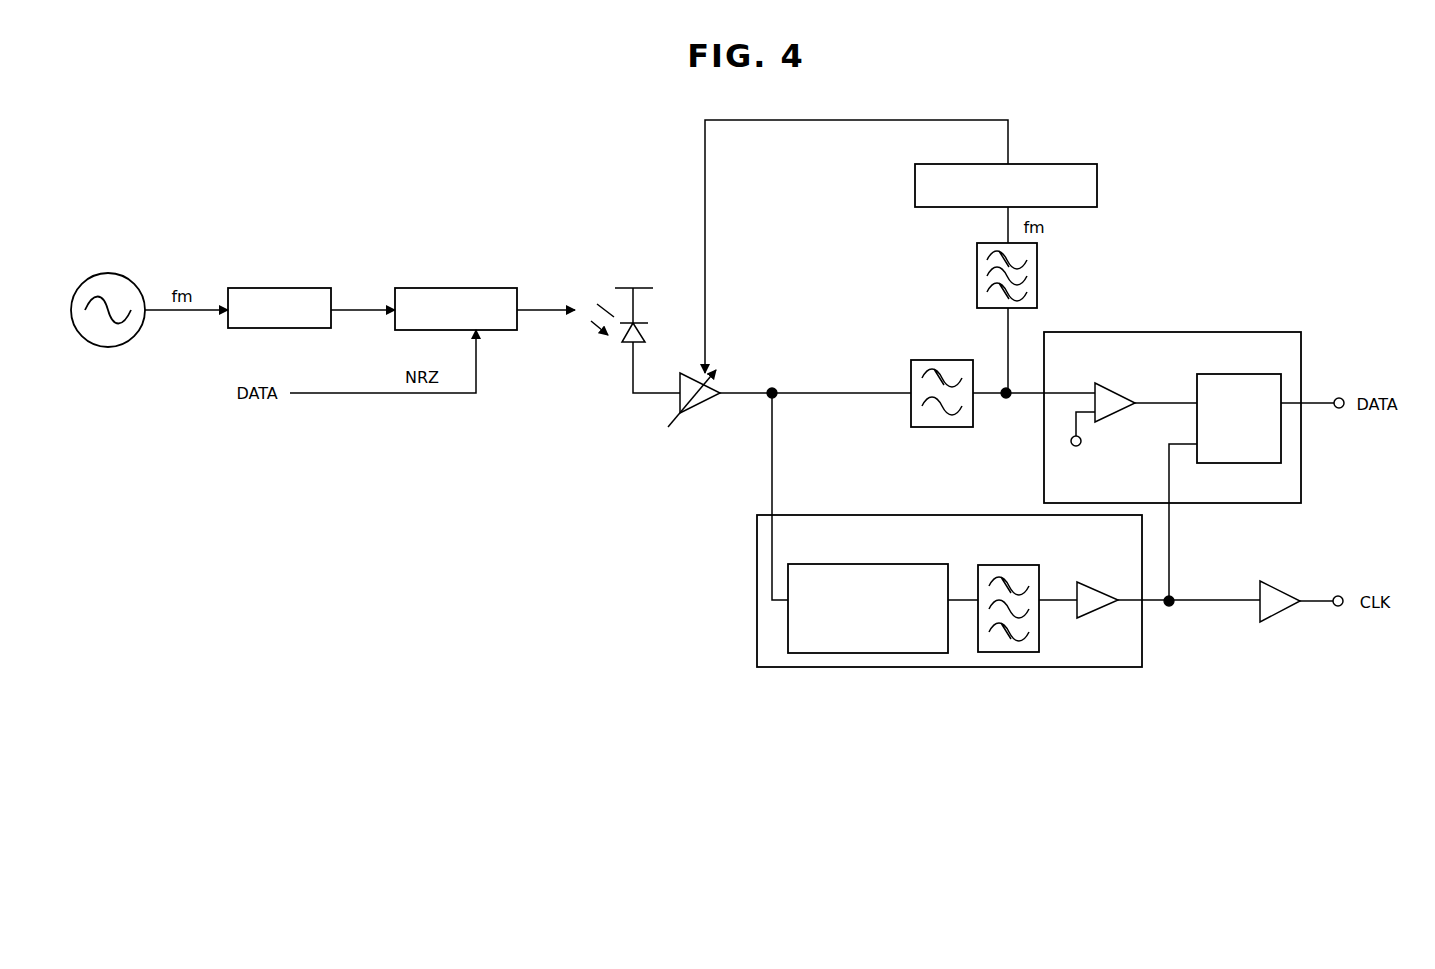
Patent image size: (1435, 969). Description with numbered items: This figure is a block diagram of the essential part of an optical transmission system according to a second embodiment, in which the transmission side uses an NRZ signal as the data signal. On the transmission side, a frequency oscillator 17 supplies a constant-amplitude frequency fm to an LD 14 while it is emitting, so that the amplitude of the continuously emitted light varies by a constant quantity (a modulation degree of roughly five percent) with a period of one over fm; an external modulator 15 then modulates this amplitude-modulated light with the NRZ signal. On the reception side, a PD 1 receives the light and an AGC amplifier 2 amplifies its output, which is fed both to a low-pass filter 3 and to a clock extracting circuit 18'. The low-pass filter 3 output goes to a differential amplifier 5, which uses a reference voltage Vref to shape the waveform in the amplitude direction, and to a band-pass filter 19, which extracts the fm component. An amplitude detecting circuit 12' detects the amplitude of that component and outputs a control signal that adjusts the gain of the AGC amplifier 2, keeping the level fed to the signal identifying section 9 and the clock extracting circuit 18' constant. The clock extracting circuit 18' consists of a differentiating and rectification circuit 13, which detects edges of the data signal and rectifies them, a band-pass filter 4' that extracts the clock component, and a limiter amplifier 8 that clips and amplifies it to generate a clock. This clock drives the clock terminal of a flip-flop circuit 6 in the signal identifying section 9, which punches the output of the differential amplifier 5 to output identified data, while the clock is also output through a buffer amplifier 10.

The light-receiving device 1 is at (628, 346).
The AGC amplifier 2 is at (710, 395).
The low-pass filter 3 is at (940, 360).
The band-pass filter 4' is at (1008, 591).
The differential amplifier 5 is at (1118, 385).
The flip-flop circuit 6 is at (1230, 375).
The limiter amplifier 8 is at (1100, 584).
The signal identifying section 9 is at (1172, 331).
The buffer amplifier 10 is at (1285, 585).
The amplitude detecting circuit 12' is at (1006, 164).
The differentiating and rectification circuit 13 is at (898, 564).
The LD 14 is at (278, 288).
The external modulator 15 is at (448, 288).
The frequency oscillator 17 is at (104, 273).
The clock extracting circuit 18' is at (1008, 563).
The band-pass filter 19 is at (977, 274).